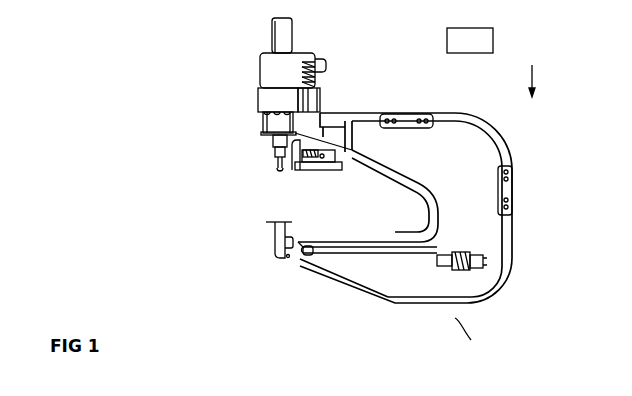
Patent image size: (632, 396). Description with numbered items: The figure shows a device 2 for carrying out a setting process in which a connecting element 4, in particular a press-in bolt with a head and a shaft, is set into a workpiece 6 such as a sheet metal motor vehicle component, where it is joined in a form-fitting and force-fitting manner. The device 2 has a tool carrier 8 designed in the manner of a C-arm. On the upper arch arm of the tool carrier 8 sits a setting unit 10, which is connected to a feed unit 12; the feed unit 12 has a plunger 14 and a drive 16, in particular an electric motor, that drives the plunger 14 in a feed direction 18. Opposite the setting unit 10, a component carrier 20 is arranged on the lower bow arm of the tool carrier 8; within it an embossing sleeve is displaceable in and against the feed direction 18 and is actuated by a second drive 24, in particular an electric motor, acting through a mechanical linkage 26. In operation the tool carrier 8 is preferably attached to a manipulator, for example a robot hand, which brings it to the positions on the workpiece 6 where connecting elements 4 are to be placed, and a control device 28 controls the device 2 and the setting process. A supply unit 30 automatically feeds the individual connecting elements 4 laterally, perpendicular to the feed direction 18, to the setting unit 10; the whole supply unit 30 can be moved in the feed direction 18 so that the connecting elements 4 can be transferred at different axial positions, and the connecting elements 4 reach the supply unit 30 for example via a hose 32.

The device 2 is at (500, 363).
The connecting element 4 is at (294, 170).
The workpiece 6 is at (270, 222).
The tool carrier 8 is at (442, 147).
The setting unit 10 is at (268, 137).
The feed unit 12 is at (244, 84).
The plunger 14 is at (282, 30).
The drive 16 is at (275, 67).
The feed direction 18 is at (535, 80).
The component carrier 20 is at (272, 227).
The second drive 24 is at (470, 270).
The mechanical linkage 26 is at (334, 270).
The control device 28 is at (483, 42).
The supply unit 30 is at (334, 171).
The hose 32 is at (313, 171).